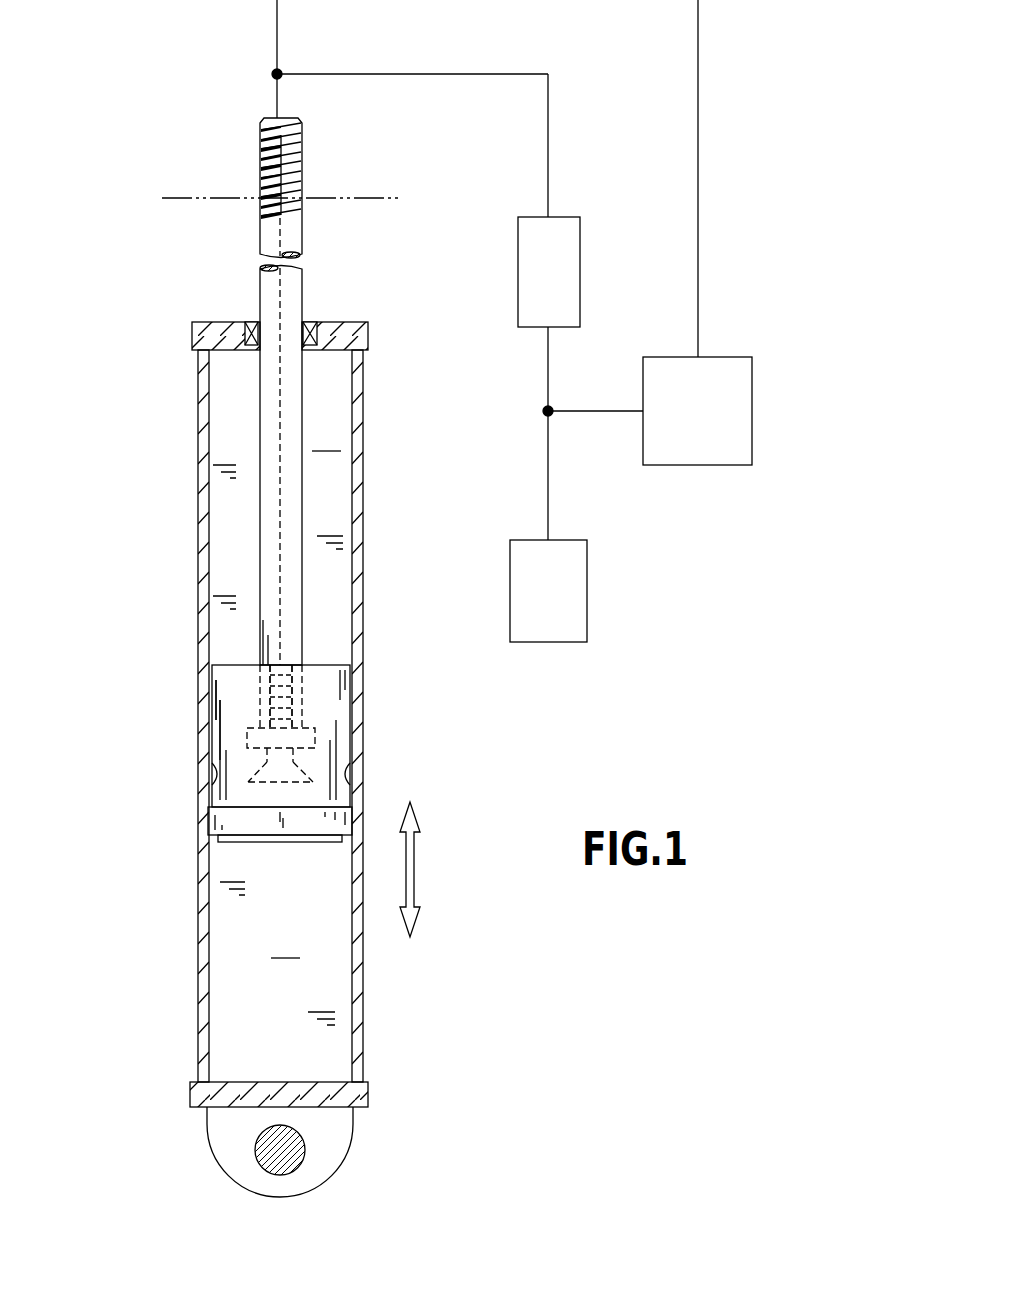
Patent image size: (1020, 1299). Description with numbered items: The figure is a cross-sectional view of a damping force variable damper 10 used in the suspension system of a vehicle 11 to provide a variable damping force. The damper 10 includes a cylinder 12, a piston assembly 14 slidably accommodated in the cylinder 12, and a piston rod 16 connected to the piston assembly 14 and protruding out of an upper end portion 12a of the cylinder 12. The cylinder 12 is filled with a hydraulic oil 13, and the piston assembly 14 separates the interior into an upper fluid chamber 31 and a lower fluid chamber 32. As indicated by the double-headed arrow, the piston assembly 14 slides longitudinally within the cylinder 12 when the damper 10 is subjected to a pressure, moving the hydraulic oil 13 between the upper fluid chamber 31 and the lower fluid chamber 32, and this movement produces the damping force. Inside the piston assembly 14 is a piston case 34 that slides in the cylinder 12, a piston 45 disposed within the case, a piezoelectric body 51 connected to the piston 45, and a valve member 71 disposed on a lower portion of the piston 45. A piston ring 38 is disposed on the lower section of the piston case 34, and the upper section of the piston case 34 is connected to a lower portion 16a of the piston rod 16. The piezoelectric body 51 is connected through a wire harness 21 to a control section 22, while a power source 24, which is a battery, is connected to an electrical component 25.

The damping force variable damper 10 is at (160, 240).
The vehicle 11 is at (380, 198).
The cylinder 12 is at (363, 508).
The upper end portion 12a is at (327, 325).
The hydraulic oil 13 is at (225, 597).
The piston assembly 14 is at (208, 710).
The piston rod 16 is at (302, 228).
The lower portion 16a is at (293, 643).
The wire harness 21 is at (277, 50).
The control section 22 is at (752, 411).
The power source 24 is at (580, 272).
The electrical component 25 is at (587, 592).
The upper fluid chamber 31 is at (329, 437).
The lower fluid chamber 32 is at (288, 944).
The piston case 34 is at (227, 727).
The piston ring 38 is at (212, 835).
The piston 45 is at (315, 735).
The piezoelectric body 51 is at (292, 708).
The valve member 71 is at (310, 780).